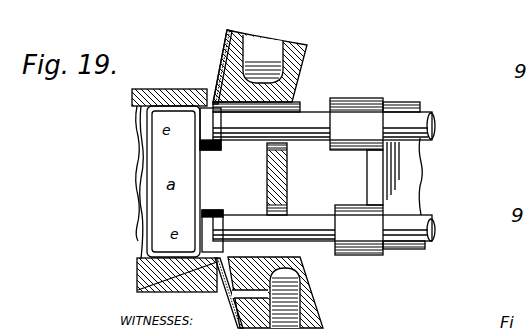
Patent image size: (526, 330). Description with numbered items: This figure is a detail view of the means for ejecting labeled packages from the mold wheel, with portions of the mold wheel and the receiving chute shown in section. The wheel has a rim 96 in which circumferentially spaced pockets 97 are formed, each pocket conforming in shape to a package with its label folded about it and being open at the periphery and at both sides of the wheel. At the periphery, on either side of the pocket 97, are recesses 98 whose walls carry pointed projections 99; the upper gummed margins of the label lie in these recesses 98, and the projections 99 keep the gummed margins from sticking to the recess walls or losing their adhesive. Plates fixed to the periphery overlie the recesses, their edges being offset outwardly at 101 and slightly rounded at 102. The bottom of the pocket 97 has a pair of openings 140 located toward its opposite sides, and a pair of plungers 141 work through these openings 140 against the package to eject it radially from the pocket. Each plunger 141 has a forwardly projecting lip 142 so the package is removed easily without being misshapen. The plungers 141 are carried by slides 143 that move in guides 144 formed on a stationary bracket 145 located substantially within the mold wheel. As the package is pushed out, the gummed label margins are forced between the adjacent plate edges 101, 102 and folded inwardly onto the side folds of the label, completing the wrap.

The rim 96 is at (298, 60).
The pocket 97 is at (254, 179).
The recess 98 is at (230, 72).
The pointed projection 99 is at (215, 88).
The offset edge 101 is at (216, 285).
The rounded edge 102 is at (140, 281).
The opening 140 is at (288, 150).
The plunger 141 is at (208, 130).
The lip 142 is at (324, 180).
The slide 143 is at (420, 210).
The guide 144 is at (352, 104).
The stationary bracket 145 is at (402, 252).